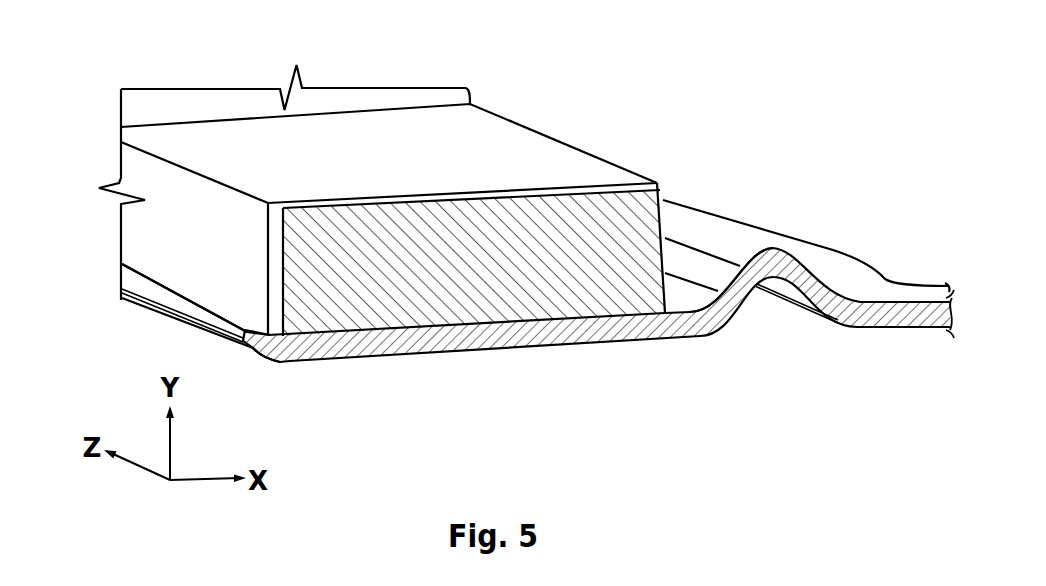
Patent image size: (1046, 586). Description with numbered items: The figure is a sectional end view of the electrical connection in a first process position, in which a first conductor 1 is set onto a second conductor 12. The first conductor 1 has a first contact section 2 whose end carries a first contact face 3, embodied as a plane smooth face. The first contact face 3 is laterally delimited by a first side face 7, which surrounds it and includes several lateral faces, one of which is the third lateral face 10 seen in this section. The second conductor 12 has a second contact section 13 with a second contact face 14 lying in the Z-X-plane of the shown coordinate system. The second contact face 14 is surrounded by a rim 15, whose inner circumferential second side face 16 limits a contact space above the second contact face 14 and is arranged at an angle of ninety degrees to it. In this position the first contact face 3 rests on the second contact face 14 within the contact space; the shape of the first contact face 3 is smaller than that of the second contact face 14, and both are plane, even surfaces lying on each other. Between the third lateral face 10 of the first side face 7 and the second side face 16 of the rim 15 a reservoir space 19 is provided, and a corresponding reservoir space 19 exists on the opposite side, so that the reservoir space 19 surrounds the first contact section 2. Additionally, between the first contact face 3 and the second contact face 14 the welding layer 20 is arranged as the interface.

The first conductor 1 is at (515, 63).
The first contact section 2 is at (535, 150).
The first contact face 3 is at (347, 336).
The first side face 7 is at (150, 181).
The third lateral face 10 is at (679, 289).
The second conductor 12 is at (850, 356).
The second contact section 13 is at (407, 341).
The second contact face 14 is at (549, 320).
The rim 15 is at (154, 301).
The second side face 16 is at (182, 283).
The reservoir space 19 is at (253, 315).
The welding layer 20 is at (468, 326).